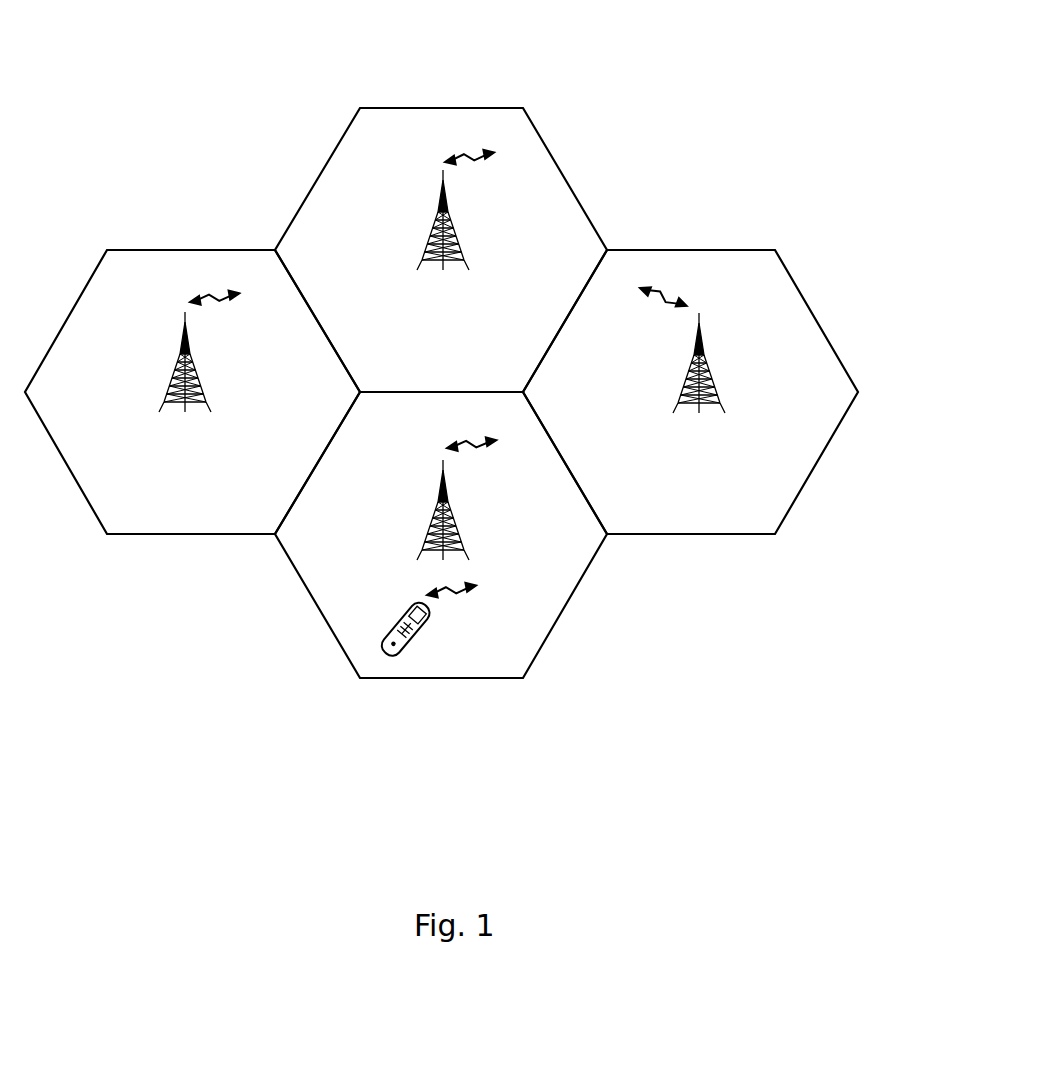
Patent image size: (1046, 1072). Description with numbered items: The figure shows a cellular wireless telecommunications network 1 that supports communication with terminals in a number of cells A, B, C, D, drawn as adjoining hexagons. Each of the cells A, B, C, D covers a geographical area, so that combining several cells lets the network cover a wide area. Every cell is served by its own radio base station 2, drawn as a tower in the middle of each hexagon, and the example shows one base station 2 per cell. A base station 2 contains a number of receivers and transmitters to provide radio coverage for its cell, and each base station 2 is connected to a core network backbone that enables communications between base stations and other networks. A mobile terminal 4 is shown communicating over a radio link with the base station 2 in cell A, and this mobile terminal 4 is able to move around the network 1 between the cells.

The cellular communication system 1 is at (446, 375).
The radio base station 2 is at (455, 272).
The mobile terminal 4 is at (390, 670).
The cell A is at (492, 680).
The cell B is at (538, 132).
The cell C is at (802, 298).
The cell D is at (173, 535).